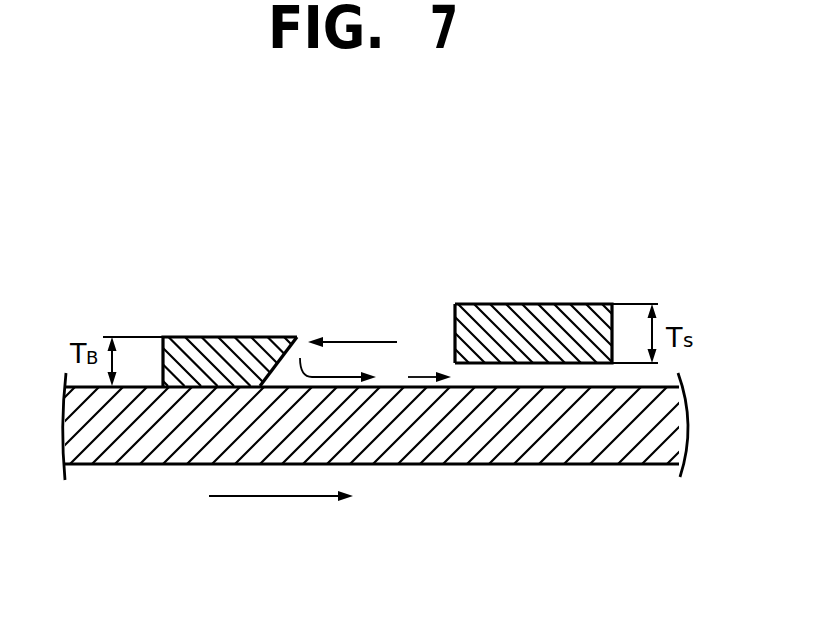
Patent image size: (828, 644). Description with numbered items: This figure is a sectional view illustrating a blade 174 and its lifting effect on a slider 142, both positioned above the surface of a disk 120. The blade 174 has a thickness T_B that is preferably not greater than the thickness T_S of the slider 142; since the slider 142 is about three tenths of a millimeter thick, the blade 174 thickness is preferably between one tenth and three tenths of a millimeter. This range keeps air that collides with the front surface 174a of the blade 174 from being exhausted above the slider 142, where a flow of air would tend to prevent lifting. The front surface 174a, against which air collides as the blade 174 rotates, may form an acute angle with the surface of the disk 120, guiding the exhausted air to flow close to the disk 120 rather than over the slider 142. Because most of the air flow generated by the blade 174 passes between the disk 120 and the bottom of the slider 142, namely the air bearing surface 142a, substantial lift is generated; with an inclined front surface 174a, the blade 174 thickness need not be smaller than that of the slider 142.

The disk 120 is at (502, 447).
The blade 174 is at (227, 317).
The front surface of the blade 174a is at (296, 346).
The slider 142 is at (525, 295).
The air bearing surface 142a is at (463, 367).